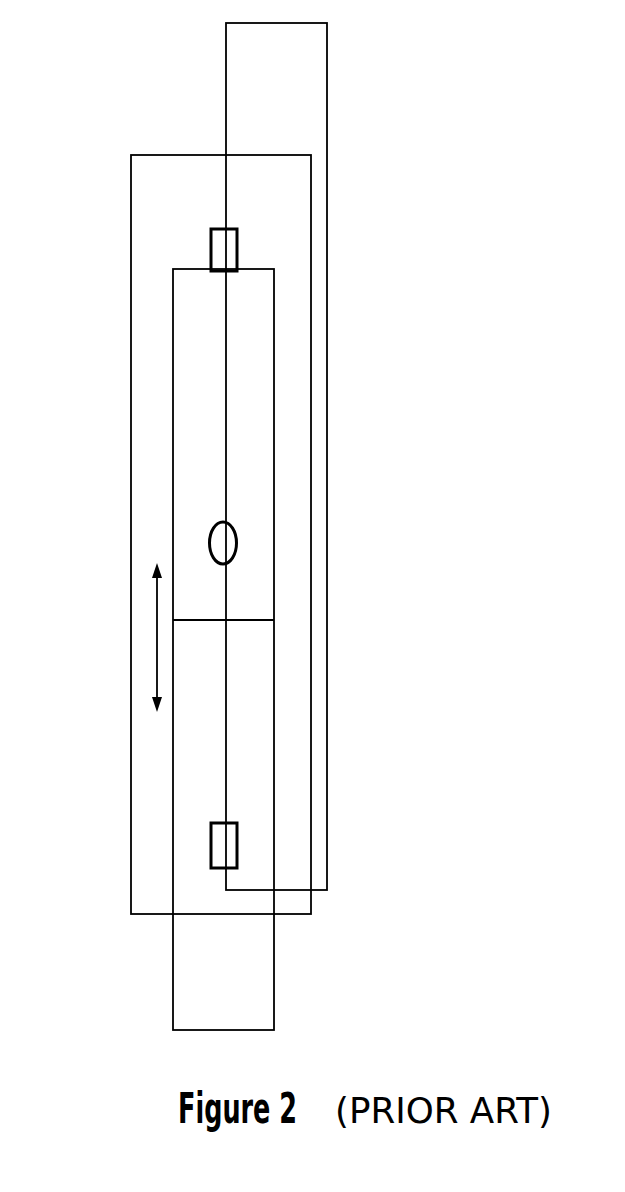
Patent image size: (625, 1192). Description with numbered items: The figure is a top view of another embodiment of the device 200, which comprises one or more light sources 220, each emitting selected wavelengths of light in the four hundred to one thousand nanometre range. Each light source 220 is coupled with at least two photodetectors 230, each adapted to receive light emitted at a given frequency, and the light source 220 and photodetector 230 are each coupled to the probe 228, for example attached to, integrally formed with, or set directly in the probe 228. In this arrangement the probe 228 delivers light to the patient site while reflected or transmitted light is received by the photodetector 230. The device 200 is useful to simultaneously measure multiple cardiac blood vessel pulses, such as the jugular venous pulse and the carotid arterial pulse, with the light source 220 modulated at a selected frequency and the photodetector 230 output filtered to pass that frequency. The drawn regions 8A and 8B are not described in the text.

The first mass / frame 8A is at (327, 99).
The second mass / slider 8B is at (215, 360).
The device 200 is at (322, 926).
The light source 220 is at (238, 538).
The probe 228 is at (311, 894).
The photodetector 230 is at (211, 230).